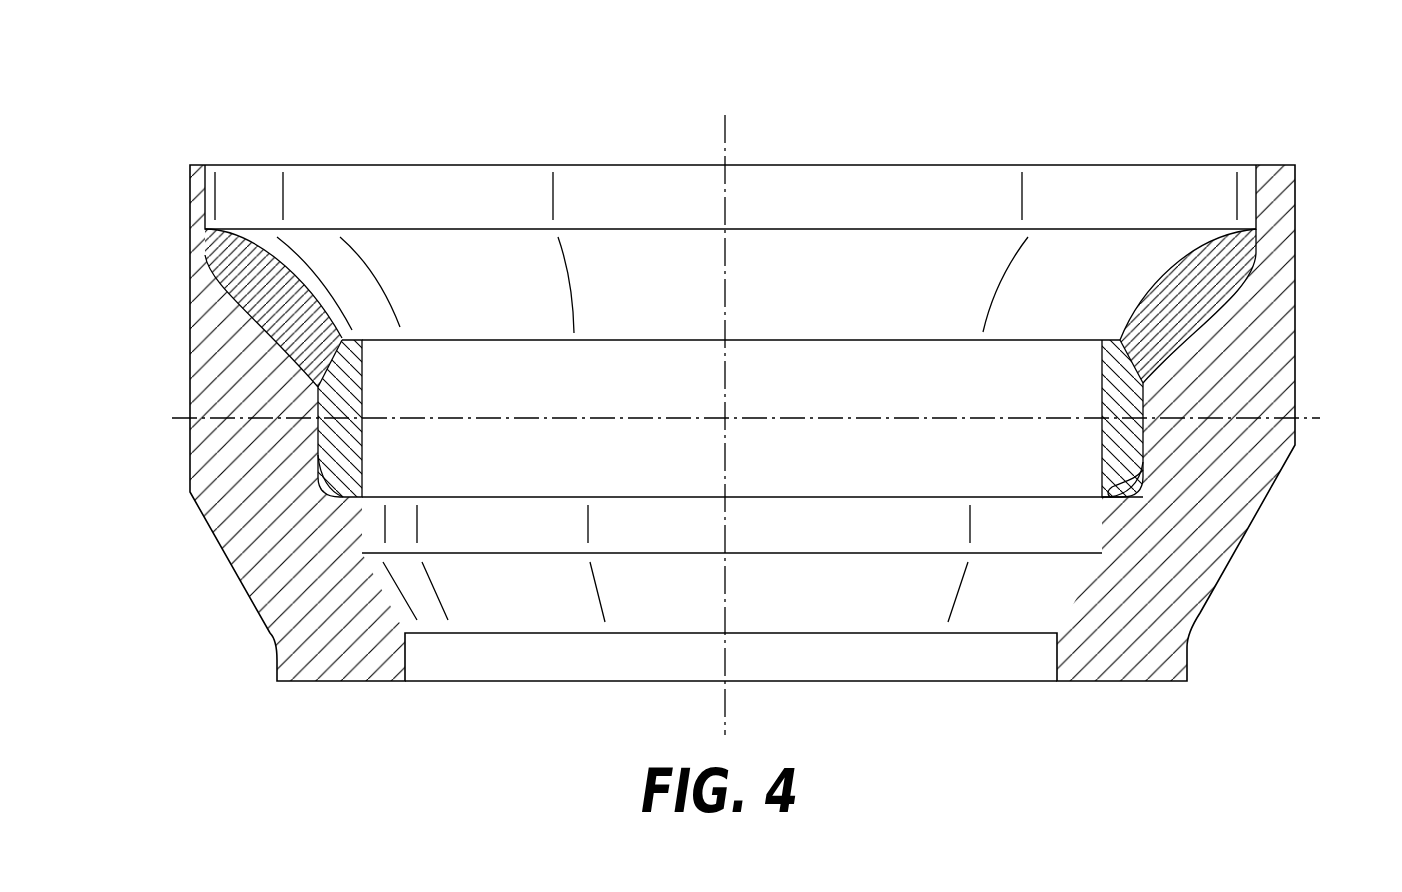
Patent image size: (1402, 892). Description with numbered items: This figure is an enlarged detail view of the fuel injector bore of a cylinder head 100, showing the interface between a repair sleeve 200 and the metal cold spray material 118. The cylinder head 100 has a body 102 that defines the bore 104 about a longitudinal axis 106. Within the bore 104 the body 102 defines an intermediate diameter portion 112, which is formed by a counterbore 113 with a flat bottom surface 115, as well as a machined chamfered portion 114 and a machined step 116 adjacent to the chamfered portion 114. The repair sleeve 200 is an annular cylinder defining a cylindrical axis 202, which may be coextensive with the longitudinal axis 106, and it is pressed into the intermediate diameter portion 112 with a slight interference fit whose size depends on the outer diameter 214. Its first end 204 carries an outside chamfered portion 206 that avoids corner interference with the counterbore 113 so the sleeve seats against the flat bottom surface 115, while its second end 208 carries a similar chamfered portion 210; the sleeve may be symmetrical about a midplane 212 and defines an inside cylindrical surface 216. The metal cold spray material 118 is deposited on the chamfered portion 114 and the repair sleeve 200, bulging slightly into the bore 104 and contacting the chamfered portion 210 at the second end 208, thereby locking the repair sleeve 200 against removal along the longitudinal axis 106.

The cylinder head 100 is at (1286, 152).
The body 102 is at (764, 379).
The bore 104 is at (520, 250).
The longitudinal axis 106 is at (727, 130).
The intermediate diameter portion 112 is at (1147, 432).
The counterbore 113 is at (1140, 472).
The machined chamfered portion 114 is at (1203, 327).
The flat bottom surface 115 is at (1114, 497).
The machined step 116 is at (212, 232).
The metal cold spray material 118 is at (1222, 272).
The repair sleeve 200 is at (887, 330).
The cylindrical axis 202 is at (746, 240).
The first end 204 is at (1110, 490).
The chamfered portion 206 is at (1137, 477).
The second end 208 is at (1107, 338).
The chamfered portion 210 is at (1153, 298).
The midplane 212 is at (892, 418).
The outer diameter 214 is at (288, 408).
The inside cylindrical surface 216 is at (363, 378).